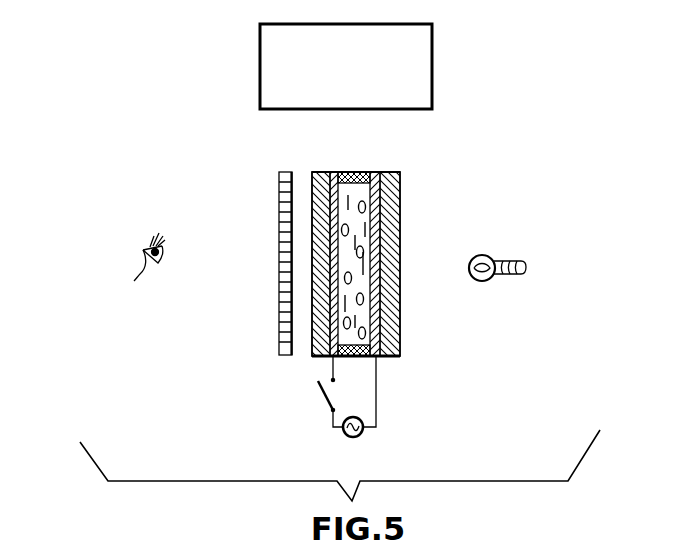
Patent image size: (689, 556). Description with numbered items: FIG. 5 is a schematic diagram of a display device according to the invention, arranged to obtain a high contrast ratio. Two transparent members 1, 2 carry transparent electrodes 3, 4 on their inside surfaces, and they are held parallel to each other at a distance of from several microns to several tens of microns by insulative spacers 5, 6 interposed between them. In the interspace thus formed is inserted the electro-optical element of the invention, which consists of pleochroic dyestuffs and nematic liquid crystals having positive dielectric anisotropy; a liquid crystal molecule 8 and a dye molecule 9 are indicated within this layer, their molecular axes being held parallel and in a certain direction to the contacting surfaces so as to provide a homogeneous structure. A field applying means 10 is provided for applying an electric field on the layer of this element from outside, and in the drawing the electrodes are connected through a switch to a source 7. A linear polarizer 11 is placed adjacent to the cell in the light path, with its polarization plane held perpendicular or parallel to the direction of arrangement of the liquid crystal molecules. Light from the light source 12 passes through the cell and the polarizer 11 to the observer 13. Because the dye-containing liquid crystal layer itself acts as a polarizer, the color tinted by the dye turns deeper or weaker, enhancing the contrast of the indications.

The transparent member 1 is at (316, 172).
The transparent member 2 is at (393, 172).
The transparent electrode 3 is at (336, 172).
The transparent electrode 4 is at (380, 172).
The insulative spacer 5 is at (360, 172).
The insulative spacer 6 is at (360, 357).
The AC voltage source 7 is at (362, 434).
The liquid crystal molecule 8 is at (363, 263).
The dye molecule 9 is at (360, 299).
The field applying means 10 is at (259, 72).
The linear polarizer 11 is at (282, 356).
The light source 12 is at (486, 281).
The observer 13 is at (136, 280).